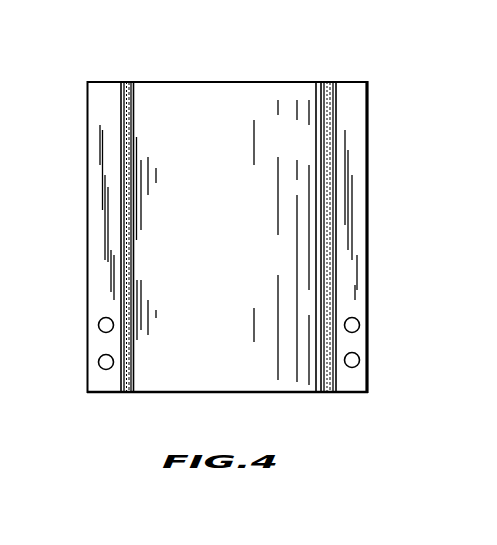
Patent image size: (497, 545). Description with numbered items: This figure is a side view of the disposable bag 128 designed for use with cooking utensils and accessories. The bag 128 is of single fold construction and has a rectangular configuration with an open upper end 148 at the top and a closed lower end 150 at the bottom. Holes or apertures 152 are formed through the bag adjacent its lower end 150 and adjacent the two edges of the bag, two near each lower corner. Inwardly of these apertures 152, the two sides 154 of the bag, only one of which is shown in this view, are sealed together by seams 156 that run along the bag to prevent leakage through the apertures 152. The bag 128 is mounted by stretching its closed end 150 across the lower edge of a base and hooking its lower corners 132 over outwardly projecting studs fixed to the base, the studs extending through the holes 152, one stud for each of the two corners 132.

The disposable bag 128 is at (219, 224).
The open upper end 148 is at (200, 81).
The closed lower end 150 is at (195, 393).
The lower corners 132 is at (88, 392).
The sides 154 is at (236, 206).
The seams 156 is at (126, 268).
The holes or apertures 152 is at (102, 330).